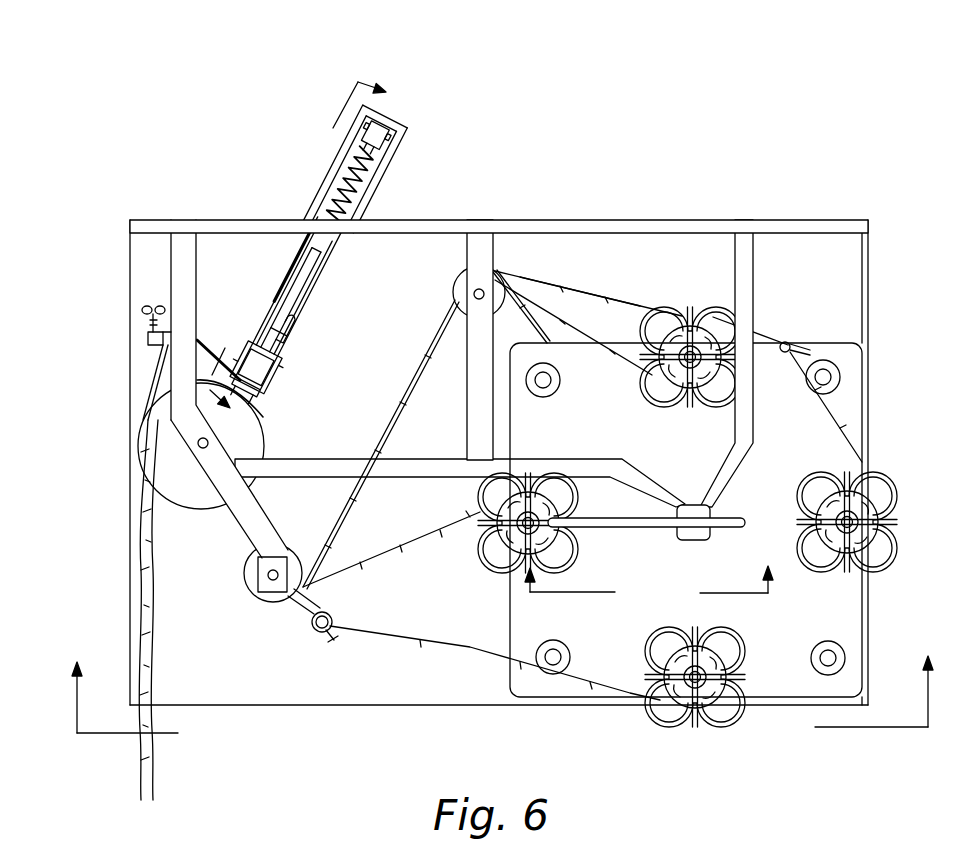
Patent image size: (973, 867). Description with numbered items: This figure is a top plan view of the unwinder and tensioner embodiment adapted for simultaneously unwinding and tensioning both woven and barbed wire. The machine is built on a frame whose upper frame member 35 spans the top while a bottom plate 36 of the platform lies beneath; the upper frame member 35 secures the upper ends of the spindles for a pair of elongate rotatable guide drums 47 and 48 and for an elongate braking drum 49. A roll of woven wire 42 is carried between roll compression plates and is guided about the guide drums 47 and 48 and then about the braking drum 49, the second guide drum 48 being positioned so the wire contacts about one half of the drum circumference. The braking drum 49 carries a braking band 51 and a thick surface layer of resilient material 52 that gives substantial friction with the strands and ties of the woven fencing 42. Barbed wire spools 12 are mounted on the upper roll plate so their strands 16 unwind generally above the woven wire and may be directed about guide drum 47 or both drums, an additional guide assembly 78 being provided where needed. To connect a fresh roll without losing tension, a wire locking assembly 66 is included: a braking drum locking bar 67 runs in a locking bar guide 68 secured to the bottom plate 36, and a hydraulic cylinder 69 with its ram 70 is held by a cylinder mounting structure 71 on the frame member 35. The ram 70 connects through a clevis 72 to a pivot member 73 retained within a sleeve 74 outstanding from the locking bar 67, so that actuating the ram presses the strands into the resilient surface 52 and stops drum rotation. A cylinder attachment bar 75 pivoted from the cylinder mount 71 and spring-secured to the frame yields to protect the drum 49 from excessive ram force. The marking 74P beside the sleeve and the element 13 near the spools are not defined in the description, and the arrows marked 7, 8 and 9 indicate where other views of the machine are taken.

The section line 7- 7 is at (503, 694).
The section line 8 is at (359, 92).
The section line 9- 9 is at (653, 587).
The barbed wire spool 12 is at (690, 310).
The cord 13 is at (650, 395).
The barbed wire strand 16 is at (243, 517).
The upper frame member 35 is at (182, 255).
The bottom plate 36 is at (405, 245).
The roll of woven wire 42 is at (557, 280).
The guide drum 47 is at (455, 285).
The guide drum 48 is at (268, 614).
The braking drum 49 is at (170, 477).
The braking band 51 is at (152, 373).
The resilient material surface layer 52 is at (260, 428).
The wire locking assembly 66 is at (293, 264).
The braking drum locking bar 67 is at (243, 391).
The locking bar guide 68 is at (288, 303).
The hydraulic cylinder 69 is at (350, 184).
The ram 70 is at (291, 300).
The cylinder mounting structure 71 is at (337, 226).
The clevis 72 is at (281, 326).
The pivot member 73 is at (256, 368).
The sleeve 74 is at (253, 350).
The latch pivot 74P is at (255, 358).
The cylinder attachment bar 75 is at (373, 138).
The additional guide assembly 78 is at (789, 343).